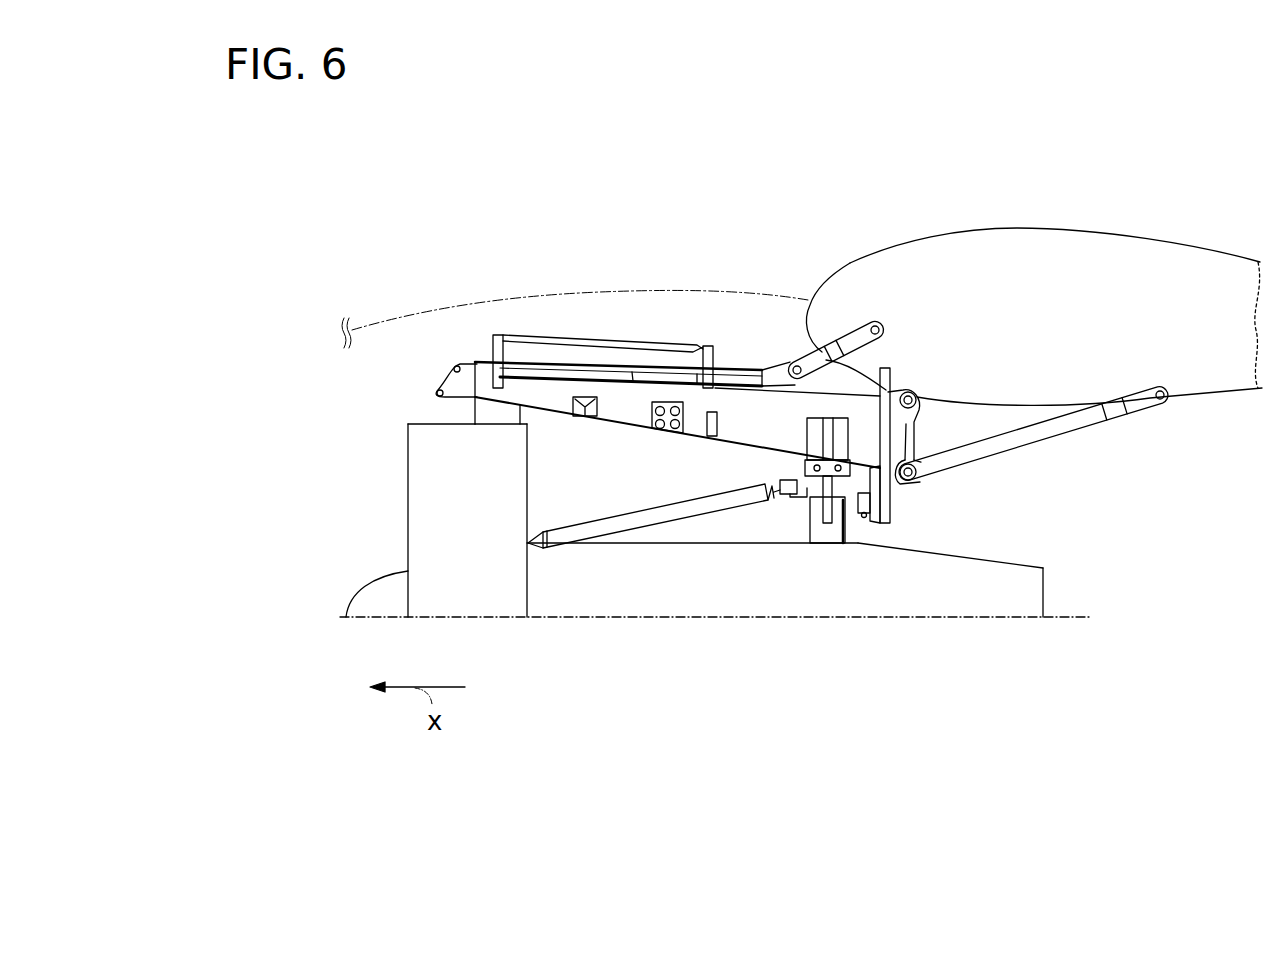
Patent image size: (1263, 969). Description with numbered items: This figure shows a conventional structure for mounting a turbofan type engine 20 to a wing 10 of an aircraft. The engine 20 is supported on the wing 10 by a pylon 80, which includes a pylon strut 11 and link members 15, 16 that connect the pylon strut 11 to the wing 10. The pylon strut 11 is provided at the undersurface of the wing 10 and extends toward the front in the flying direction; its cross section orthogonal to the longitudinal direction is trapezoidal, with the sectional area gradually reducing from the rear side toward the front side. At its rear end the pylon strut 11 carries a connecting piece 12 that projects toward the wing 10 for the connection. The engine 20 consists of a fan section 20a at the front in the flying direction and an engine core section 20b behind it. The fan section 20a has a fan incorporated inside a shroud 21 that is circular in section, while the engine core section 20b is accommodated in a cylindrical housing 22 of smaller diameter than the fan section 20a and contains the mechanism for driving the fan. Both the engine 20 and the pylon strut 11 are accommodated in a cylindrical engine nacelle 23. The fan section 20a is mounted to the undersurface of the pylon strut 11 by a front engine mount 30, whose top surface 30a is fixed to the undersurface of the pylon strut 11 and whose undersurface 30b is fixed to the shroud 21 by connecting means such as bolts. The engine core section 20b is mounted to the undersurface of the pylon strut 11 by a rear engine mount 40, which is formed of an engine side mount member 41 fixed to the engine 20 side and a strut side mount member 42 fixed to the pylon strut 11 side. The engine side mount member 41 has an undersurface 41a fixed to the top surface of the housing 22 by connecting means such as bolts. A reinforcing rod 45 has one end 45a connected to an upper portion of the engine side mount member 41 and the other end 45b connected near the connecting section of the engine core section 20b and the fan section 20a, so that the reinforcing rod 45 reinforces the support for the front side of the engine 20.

The wing 10 is at (1021, 227).
The pylon strut 11 is at (648, 372).
The connecting piece 12 is at (915, 396).
The link member 15 is at (828, 343).
The link member 16 is at (1017, 448).
The engine 20 is at (424, 527).
The fan section 20a is at (430, 424).
The engine core section 20b is at (937, 553).
The shroud 21 is at (522, 416).
The housing 22 is at (1034, 570).
The engine nacelle 23 is at (654, 292).
The front engine mount 30 is at (475, 410).
The top surface 30a is at (505, 397).
The undersurface 30b is at (500, 426).
The rear engine mount 40 is at (807, 515).
The engine side mount member 41 is at (847, 538).
The undersurface 41a is at (827, 545).
The strut side mount member 42 is at (838, 447).
The reinforcing rod 45 is at (636, 524).
The one end 45a is at (793, 488).
The other end 45b is at (530, 540).
The pylon 80 is at (621, 329).